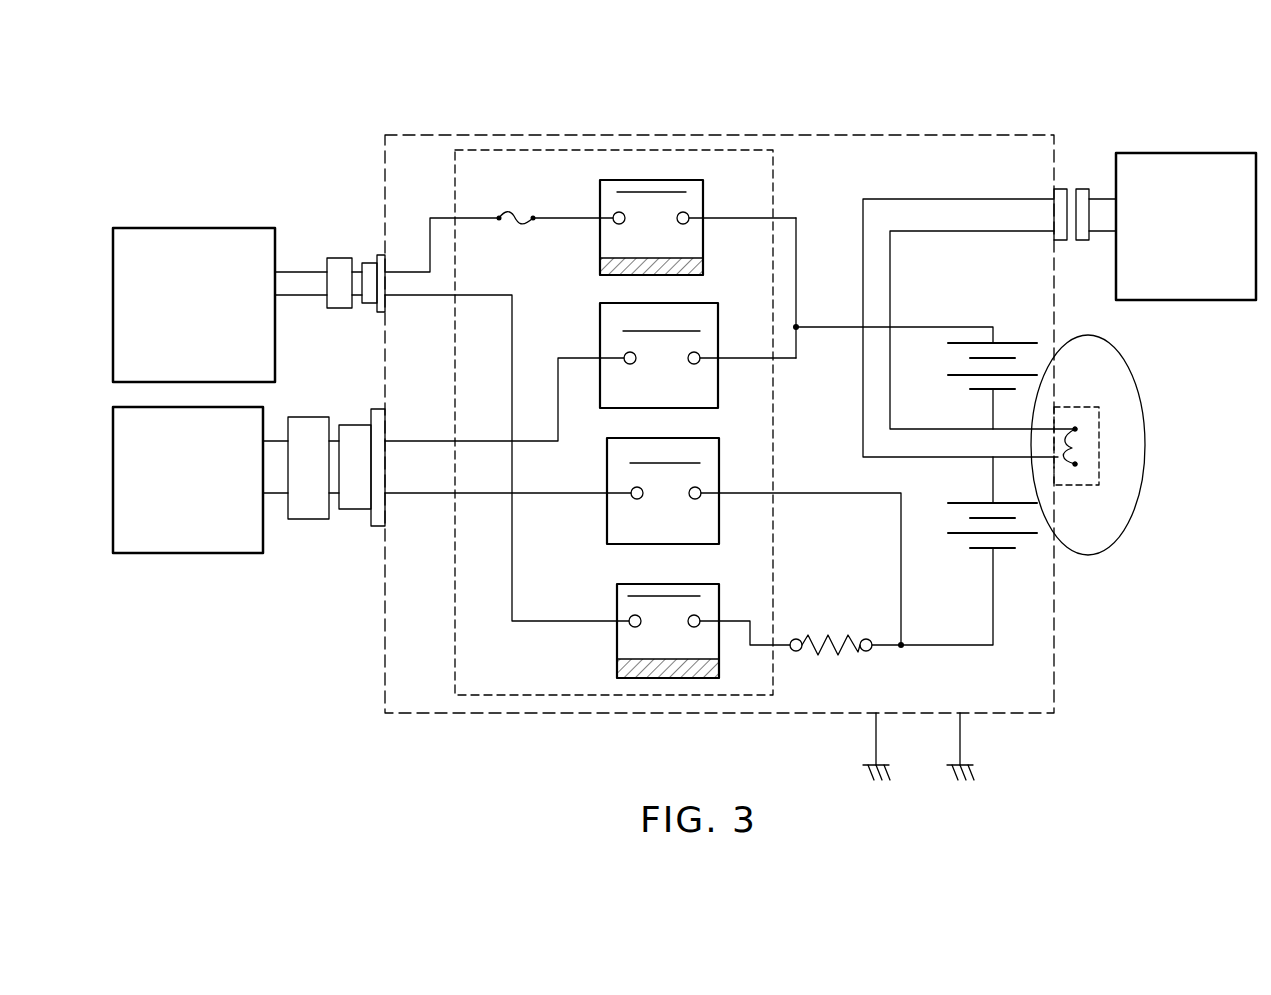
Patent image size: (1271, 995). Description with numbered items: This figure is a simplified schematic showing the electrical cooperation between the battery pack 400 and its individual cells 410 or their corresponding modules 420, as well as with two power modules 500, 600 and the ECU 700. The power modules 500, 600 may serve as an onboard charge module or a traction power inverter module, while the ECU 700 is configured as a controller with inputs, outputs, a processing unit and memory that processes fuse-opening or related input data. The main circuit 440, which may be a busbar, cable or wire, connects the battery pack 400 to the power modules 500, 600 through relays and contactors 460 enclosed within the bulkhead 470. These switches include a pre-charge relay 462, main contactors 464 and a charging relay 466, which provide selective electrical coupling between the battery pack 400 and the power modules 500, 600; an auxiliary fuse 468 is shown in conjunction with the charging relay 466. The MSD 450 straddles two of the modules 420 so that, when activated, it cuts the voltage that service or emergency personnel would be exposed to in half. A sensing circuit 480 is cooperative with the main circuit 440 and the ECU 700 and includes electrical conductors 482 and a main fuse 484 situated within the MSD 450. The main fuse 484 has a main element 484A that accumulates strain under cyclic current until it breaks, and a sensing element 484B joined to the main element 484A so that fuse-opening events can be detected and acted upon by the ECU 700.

The battery pack 400 is at (796, 106).
The individual cells 410 is at (1008, 550).
The modules 420 is at (1026, 531).
The main circuit 440 is at (788, 214).
The MSD 450 is at (1145, 446).
The relays and contactors 460 is at (588, 168).
The pre-charge relay 462 is at (617, 650).
The main contactors 464 is at (718, 387).
The charging relay 466 is at (600, 245).
The auxiliary fuse 468 is at (508, 212).
The bulkhead 470 is at (440, 672).
The sensing circuit 480 is at (1047, 338).
The electrical conductors 482 is at (940, 199).
The main fuse 484 is at (1068, 407).
The main element 484A is at (1076, 429).
The sensing element 484B is at (1077, 470).
The power module 500 is at (196, 228).
The power module 600 is at (185, 553).
The ECU 700 is at (1176, 153).